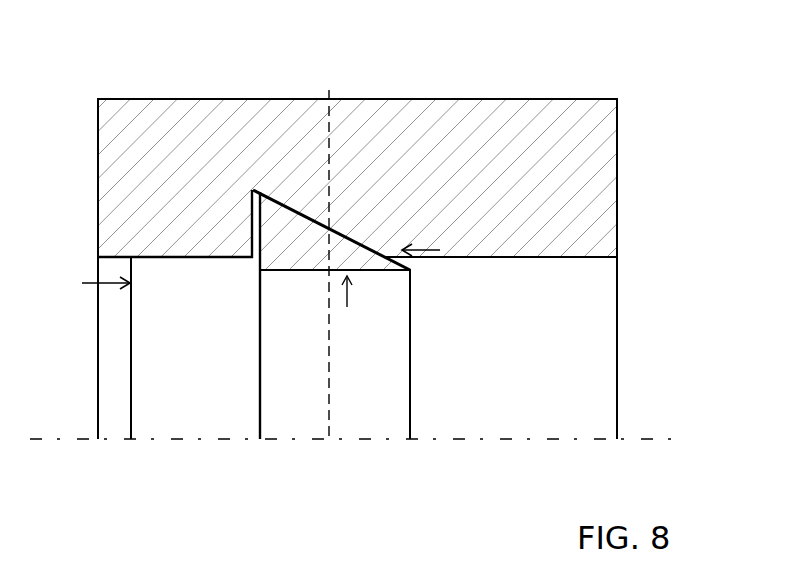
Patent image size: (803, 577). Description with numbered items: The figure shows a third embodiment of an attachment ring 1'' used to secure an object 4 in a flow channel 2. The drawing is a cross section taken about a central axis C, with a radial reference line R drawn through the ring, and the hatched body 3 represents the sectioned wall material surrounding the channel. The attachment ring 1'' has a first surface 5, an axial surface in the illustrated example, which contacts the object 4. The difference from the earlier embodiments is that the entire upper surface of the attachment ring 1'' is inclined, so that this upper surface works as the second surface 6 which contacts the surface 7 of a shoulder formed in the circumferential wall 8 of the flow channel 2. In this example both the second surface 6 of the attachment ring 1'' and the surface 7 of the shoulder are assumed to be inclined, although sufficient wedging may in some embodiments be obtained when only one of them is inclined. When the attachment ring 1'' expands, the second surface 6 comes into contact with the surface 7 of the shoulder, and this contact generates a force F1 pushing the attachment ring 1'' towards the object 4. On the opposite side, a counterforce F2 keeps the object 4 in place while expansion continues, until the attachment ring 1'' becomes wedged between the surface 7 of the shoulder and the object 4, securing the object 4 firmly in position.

The attachment ring 1'' is at (476, 368).
The flow channel 2 is at (612, 307).
The hub part 3 is at (617, 125).
The object 4 is at (197, 433).
The first surface 5 is at (258, 262).
The second surface 6 is at (371, 245).
The surface of the shoulder 7 is at (362, 242).
The circumferential wall 8 is at (490, 258).
The central axis C is at (380, 440).
The radial reference line R is at (330, 90).
The force F1 is at (415, 255).
The counterforce F2 is at (82, 283).